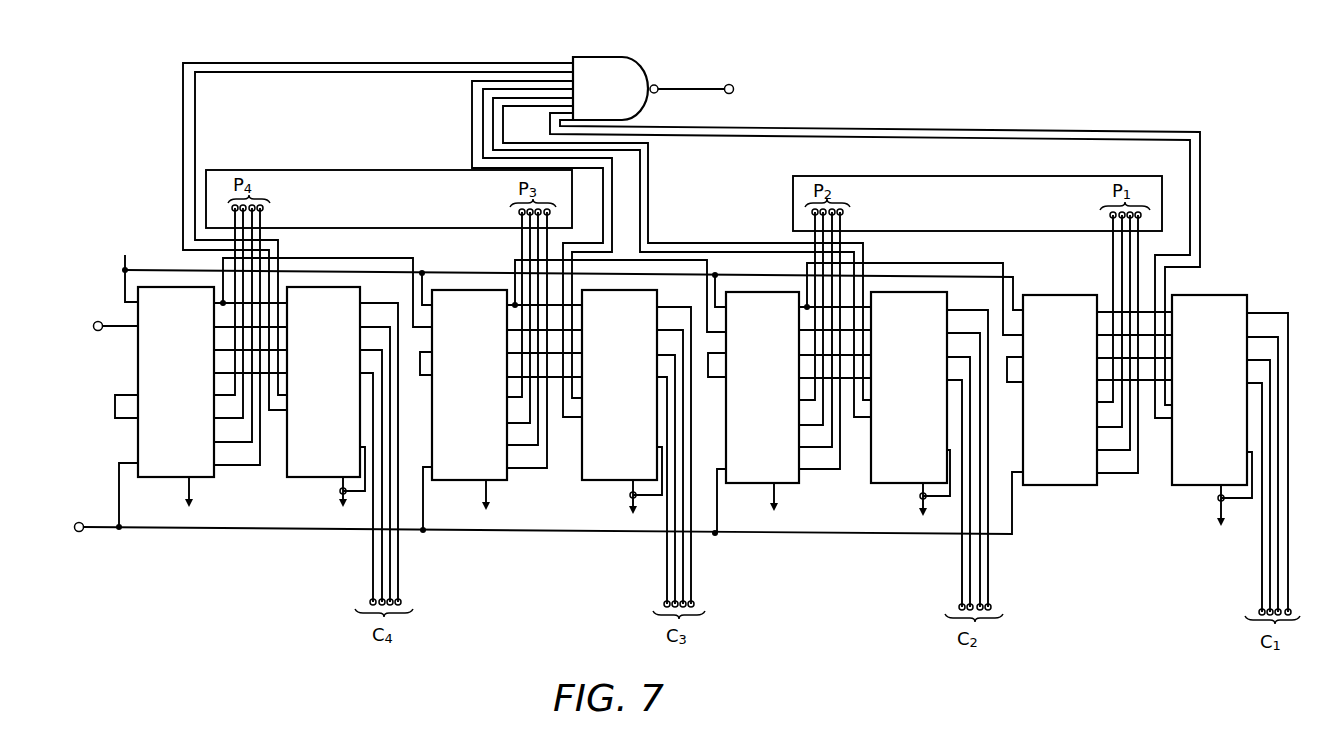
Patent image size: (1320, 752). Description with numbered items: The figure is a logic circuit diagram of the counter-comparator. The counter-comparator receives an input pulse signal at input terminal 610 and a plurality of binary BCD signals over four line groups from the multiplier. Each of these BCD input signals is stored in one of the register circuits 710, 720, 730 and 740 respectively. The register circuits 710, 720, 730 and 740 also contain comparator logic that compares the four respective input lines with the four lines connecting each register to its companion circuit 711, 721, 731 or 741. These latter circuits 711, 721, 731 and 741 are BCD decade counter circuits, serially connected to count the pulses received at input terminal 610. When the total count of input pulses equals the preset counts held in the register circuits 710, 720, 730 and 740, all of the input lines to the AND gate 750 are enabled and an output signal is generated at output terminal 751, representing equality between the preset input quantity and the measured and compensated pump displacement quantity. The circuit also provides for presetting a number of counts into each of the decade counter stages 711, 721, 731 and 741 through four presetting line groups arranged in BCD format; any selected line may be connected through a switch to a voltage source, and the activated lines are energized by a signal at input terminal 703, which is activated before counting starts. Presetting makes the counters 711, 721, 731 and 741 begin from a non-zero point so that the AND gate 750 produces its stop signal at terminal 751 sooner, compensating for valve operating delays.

The AND gate 750 is at (636, 57).
The output terminal 751 is at (734, 86).
The input terminal 610 is at (95, 322).
The input terminal 703 is at (78, 532).
The BCD decade counter circuit 741 is at (190, 478).
The register circuit 740 is at (318, 479).
The BCD decade counter circuit 731 is at (468, 482).
The register circuit 730 is at (608, 483).
The BCD decade counter circuit 721 is at (760, 485).
The register circuit 720 is at (887, 485).
The BCD decade counter circuit 711 is at (1083, 486).
The register circuit 710 is at (1180, 487).